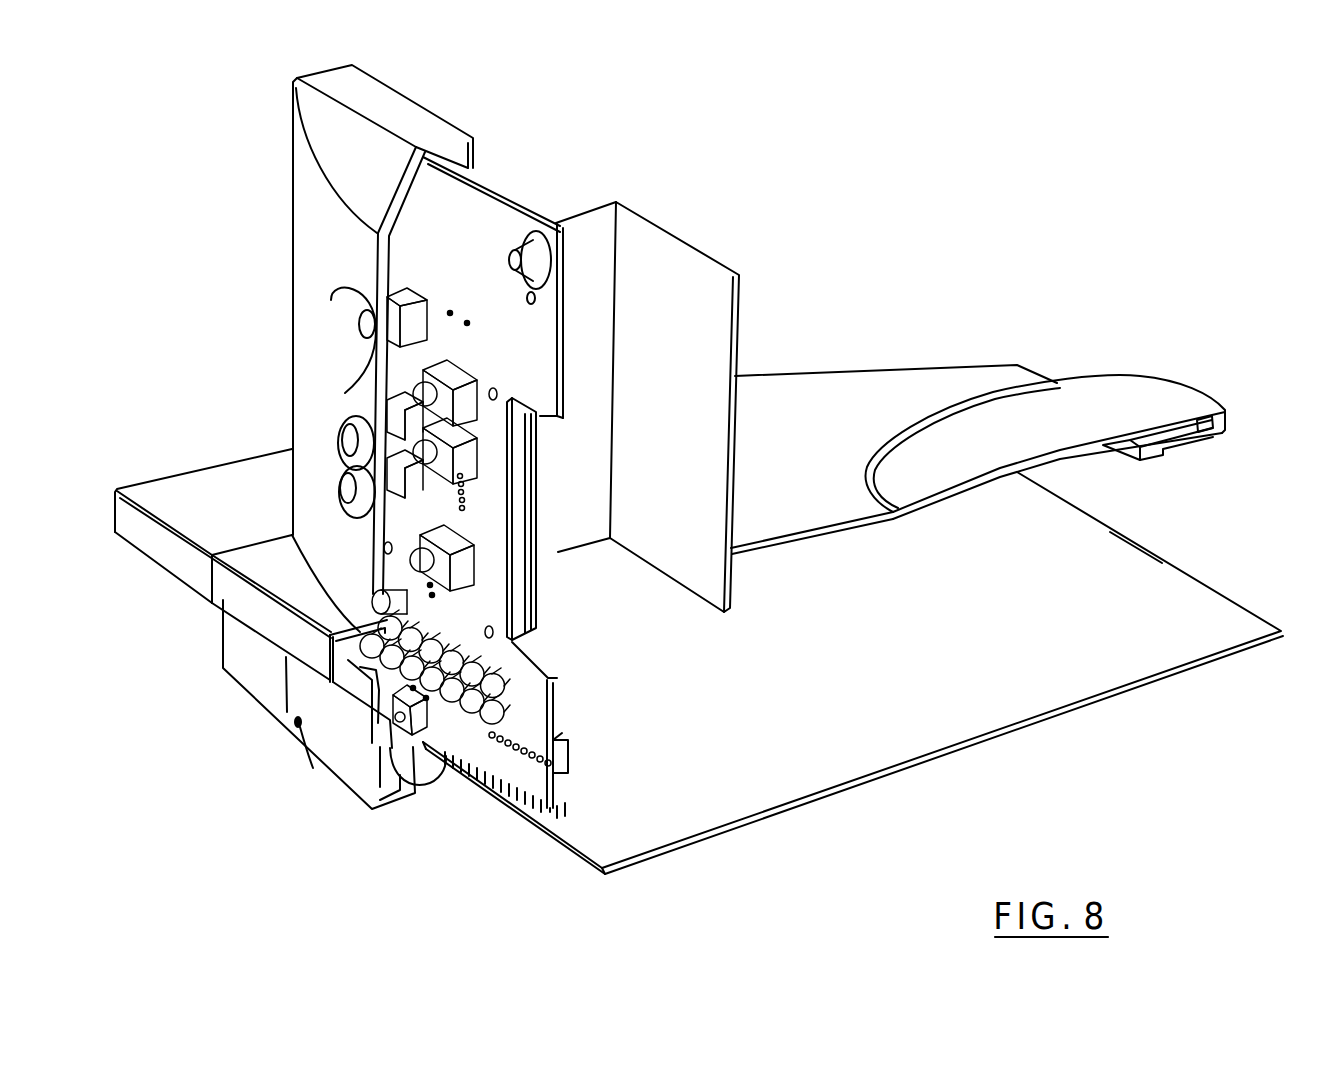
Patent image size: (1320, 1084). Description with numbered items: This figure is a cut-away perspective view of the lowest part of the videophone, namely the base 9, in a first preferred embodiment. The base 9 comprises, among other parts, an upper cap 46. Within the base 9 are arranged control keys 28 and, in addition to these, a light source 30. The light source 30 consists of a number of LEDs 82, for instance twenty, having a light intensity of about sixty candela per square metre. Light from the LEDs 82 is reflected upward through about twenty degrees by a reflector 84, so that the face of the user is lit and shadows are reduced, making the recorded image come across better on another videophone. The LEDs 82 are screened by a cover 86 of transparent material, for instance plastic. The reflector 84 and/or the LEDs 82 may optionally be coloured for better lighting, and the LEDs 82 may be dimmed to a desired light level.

The base 9 is at (920, 239).
The control keys 28 is at (345, 437).
The light source 30 is at (248, 606).
The upper cap 46 is at (875, 392).
The LEDs 82 is at (483, 735).
The reflector 84 is at (355, 660).
The cover 86 is at (300, 640).